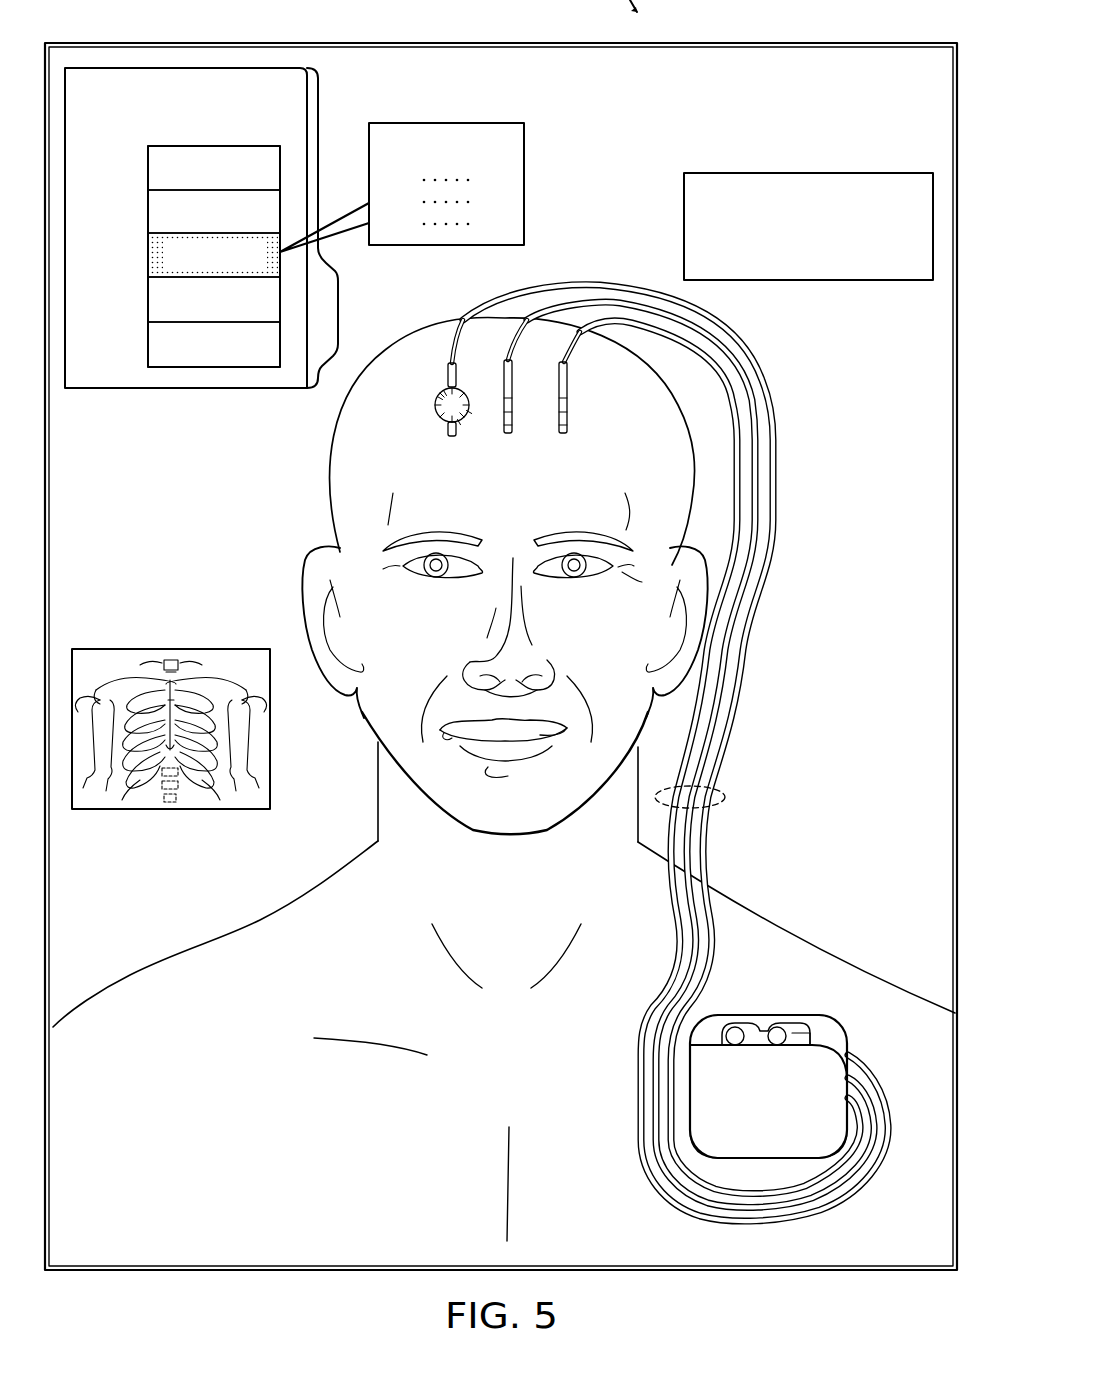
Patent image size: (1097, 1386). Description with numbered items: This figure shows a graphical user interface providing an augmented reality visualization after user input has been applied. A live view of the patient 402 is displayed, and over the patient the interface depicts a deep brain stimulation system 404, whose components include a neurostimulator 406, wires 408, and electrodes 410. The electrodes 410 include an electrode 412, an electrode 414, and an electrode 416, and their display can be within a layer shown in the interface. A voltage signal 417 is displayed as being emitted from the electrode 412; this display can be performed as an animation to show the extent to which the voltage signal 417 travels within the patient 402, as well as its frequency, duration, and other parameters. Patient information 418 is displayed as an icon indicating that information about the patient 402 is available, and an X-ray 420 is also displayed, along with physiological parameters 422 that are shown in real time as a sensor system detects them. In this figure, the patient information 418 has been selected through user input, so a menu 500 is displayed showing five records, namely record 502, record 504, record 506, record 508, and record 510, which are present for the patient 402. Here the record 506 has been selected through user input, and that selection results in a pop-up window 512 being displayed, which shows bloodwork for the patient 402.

The patient 402 is at (504, 752).
The deep brain stimulation system 404 is at (409, 326).
The neurostimulator 406 is at (768, 1015).
The wires 408 is at (725, 799).
The electrodes 410 is at (436, 433).
The electrode 412 is at (608, 739).
The electrode 414 is at (508, 433).
The electrode 416 is at (563, 433).
The voltage signal 417 is at (432, 408).
The patient information 418 is at (184, 389).
The X-ray 420 is at (135, 649).
The physiological parameters 422 is at (808, 173).
The menu 500 is at (213, 145).
The record 502 is at (148, 166).
The record 504 is at (148, 211).
The record 506 is at (148, 255).
The record 508 is at (148, 299).
The record 510 is at (148, 344).
The pop-up window 512 is at (446, 123).